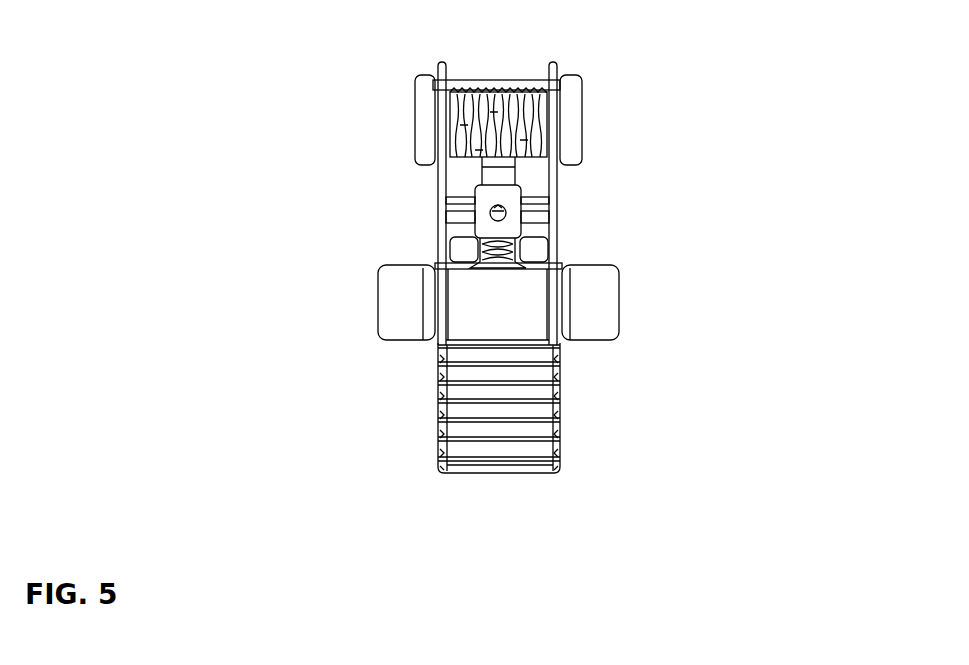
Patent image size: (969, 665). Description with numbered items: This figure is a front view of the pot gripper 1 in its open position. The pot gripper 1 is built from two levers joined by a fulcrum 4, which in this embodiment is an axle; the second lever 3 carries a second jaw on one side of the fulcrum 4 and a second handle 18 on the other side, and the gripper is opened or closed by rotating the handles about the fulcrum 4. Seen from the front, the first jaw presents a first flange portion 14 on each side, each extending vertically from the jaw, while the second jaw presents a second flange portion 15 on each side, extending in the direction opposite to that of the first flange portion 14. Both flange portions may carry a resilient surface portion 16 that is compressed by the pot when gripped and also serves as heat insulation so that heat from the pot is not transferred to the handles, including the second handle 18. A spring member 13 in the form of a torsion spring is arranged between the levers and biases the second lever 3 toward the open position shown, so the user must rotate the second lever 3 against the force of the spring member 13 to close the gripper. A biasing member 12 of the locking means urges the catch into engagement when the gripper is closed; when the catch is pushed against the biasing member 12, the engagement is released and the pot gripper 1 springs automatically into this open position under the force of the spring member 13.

The pot gripper 1 is at (547, 257).
The second lever 3 is at (528, 397).
The fulcrum 4 is at (417, 112).
The biasing member 12 is at (500, 268).
The spring member 13 is at (494, 90).
The first flange portion 14 is at (387, 265).
The second flange portion 15 is at (467, 252).
The resilient surface portion 16 is at (398, 300).
The second handle 18 is at (530, 465).